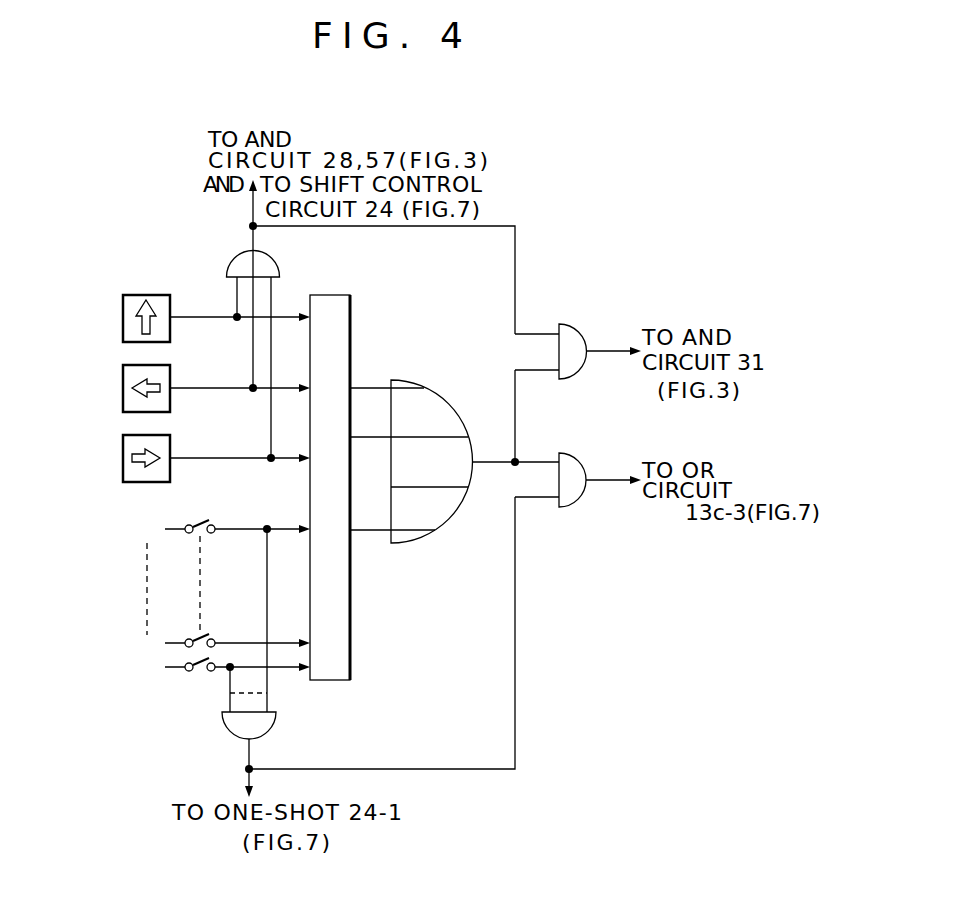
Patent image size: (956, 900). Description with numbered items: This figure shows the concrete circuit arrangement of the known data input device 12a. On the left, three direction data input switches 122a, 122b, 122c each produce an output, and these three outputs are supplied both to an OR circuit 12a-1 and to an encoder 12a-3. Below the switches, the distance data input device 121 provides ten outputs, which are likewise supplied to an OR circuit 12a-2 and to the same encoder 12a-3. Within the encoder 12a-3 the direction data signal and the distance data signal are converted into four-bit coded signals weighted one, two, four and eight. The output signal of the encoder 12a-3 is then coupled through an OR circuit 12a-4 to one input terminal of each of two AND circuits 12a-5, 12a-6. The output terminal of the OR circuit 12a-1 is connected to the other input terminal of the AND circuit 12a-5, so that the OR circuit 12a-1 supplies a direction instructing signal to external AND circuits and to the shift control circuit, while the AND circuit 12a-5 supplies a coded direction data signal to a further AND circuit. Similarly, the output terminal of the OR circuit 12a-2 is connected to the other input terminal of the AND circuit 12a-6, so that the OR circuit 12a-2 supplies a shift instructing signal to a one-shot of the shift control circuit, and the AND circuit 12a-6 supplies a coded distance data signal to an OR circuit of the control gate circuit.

The data input device 12a is at (440, 301).
The OR circuit 12a-1 is at (279, 260).
The OR circuit 12a-2 is at (268, 728).
The encoder 12a-3 is at (351, 621).
The OR circuit 12a-4 is at (412, 545).
The AND circuit 12a-5 is at (570, 323).
The AND circuit 12a-6 is at (566, 508).
The distance data input device 121 is at (253, 589).
The direction data input switch 122a is at (124, 319).
The direction data input switch 122b is at (124, 390).
The direction data input switch 122c is at (124, 461).